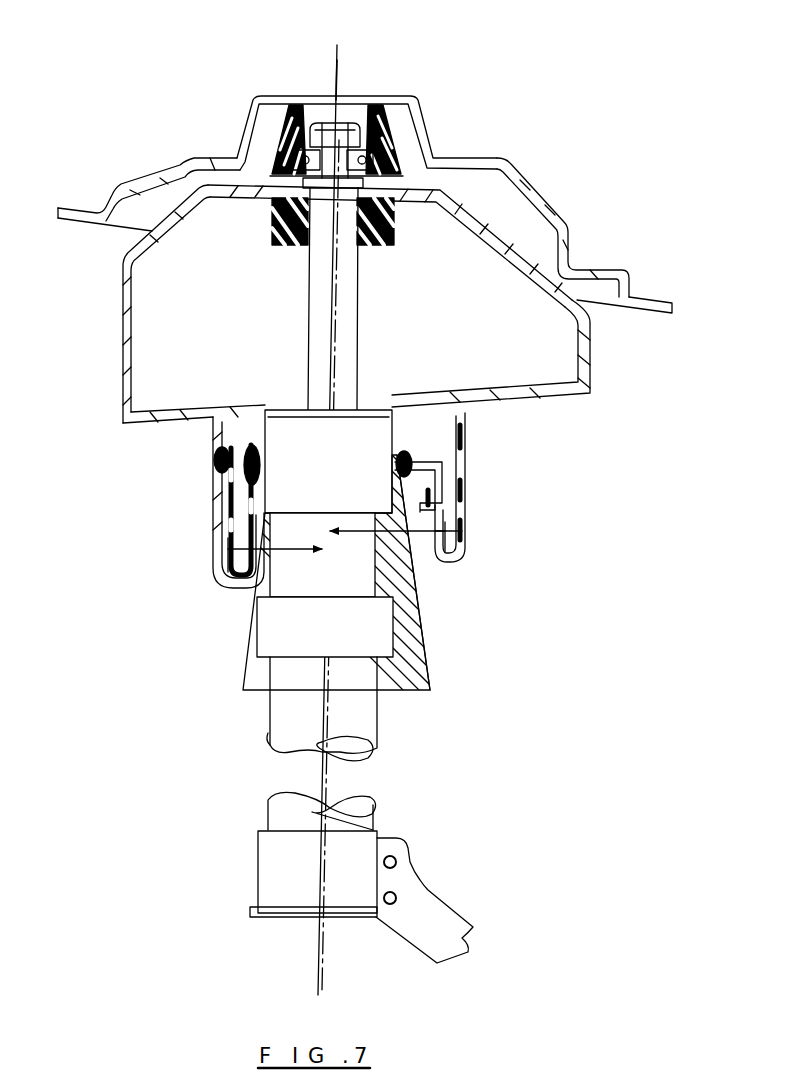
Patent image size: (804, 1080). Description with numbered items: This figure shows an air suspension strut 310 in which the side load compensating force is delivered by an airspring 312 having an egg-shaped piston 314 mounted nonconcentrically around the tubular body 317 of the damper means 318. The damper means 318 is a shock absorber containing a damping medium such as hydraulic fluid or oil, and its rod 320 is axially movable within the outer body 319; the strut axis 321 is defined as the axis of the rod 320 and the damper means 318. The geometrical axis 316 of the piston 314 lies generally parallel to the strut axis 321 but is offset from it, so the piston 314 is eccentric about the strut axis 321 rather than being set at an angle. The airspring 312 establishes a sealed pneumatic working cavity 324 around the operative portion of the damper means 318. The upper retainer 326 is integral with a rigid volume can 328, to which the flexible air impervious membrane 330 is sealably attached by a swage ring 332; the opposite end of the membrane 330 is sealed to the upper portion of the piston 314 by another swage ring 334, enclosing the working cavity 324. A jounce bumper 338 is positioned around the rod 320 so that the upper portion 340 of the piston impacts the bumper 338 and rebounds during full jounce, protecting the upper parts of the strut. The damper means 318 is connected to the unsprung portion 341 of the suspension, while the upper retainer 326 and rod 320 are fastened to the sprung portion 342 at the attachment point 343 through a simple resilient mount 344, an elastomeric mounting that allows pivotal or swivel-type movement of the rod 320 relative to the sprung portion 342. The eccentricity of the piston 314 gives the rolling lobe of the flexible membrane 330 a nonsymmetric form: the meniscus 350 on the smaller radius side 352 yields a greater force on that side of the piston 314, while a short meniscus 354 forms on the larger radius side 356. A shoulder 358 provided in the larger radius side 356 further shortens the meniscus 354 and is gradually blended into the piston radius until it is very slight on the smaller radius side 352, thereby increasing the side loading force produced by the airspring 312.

The air suspension strut 310 is at (549, 82).
The airspring 312 is at (469, 473).
The piston 314 is at (424, 678).
The geometrical axis of the piston 316 is at (333, 768).
The tubular body 317 is at (374, 760).
The damper means 318 is at (262, 716).
The outer body 319 is at (265, 735).
The rod 320 is at (345, 329).
The strut axis 321 is at (344, 66).
The working cavity 324 is at (580, 342).
The upper retainer 326 is at (488, 224).
The volume can 328 is at (123, 313).
The flexible membrane 330 is at (466, 517).
The swage ring 332 is at (465, 433).
The swage ring 334 is at (238, 498).
The jounce bumper 338 is at (392, 235).
The upper portion of the piston 340 is at (286, 435).
The unsprung portion 341 is at (400, 870).
The sprung portion 342 is at (420, 106).
The attachment point 343 is at (325, 178).
The resilient mount 344 is at (384, 157).
The meniscus 350 is at (213, 575).
The smaller radius side 352 is at (258, 593).
The short meniscus 354 is at (463, 548).
The larger radius side 356 is at (424, 578).
The shoulder 358 is at (447, 503).